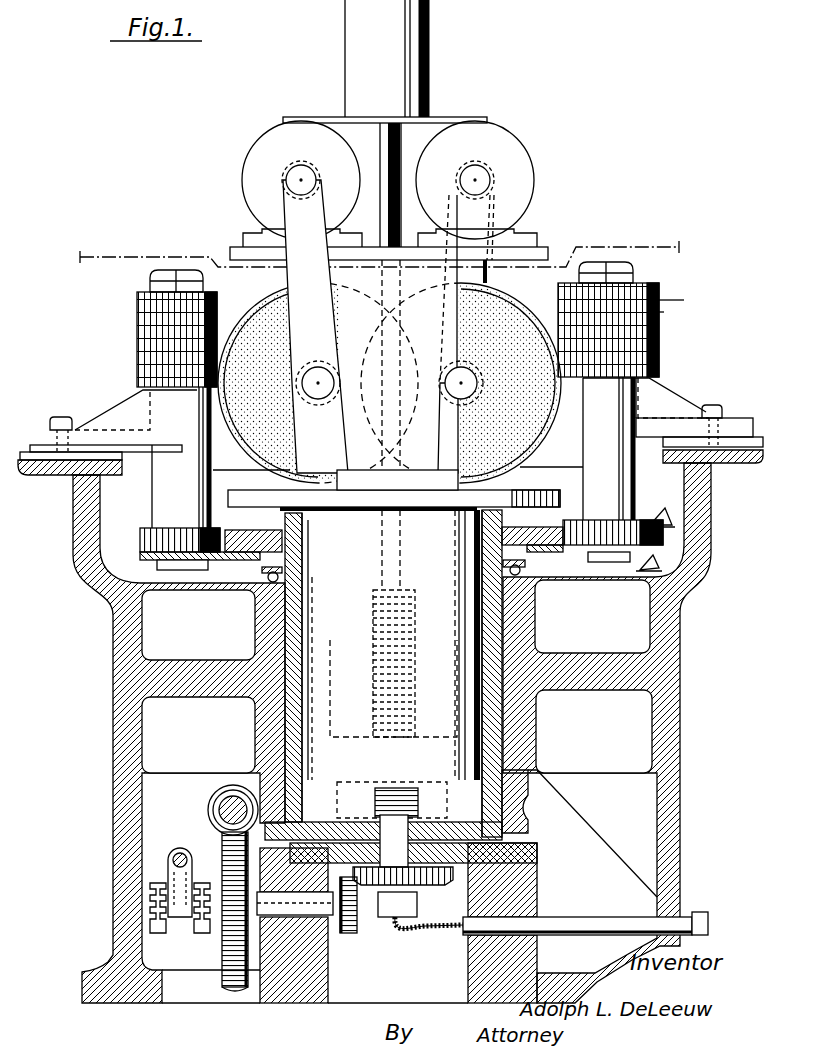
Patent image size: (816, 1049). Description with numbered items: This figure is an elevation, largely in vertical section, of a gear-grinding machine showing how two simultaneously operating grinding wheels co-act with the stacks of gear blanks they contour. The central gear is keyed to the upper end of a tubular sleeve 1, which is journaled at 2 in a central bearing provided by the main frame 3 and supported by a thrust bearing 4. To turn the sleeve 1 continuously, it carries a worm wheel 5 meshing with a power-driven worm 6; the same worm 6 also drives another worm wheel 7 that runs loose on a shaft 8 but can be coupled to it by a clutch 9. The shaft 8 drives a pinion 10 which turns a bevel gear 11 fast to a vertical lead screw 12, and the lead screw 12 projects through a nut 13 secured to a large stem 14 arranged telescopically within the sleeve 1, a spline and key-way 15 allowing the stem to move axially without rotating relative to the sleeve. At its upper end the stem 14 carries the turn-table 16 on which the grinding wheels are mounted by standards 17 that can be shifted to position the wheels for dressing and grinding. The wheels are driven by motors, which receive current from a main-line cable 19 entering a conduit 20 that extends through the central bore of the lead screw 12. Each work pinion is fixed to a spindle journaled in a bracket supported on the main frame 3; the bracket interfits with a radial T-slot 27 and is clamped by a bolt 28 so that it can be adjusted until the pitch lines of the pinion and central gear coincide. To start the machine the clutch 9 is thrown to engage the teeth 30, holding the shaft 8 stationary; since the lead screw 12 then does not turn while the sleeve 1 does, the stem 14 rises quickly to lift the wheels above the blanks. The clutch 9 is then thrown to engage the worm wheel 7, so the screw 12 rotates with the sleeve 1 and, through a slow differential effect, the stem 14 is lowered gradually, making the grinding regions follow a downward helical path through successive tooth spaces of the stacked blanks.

The tubular sleeve 1 is at (302, 572).
The journal 2 is at (288, 625).
The main frame 3 is at (712, 506).
The thrust bearing 4 is at (266, 576).
The worm wheel 5 is at (540, 816).
The worm 6 is at (207, 808).
The worm wheel 7 is at (222, 842).
The shaft 8 is at (295, 903).
The clutch 9 is at (188, 935).
The pinion 10 is at (352, 930).
The bevel gear 11 is at (446, 887).
The lead screw 12 is at (412, 618).
The nut 13 is at (425, 734).
The stem 14 is at (401, 811).
The spline and key-way 15 is at (309, 590).
The turn-table 16 is at (398, 488).
The standards 17 is at (388, 335).
The main-line cable 19 is at (712, 917).
The conduit 20 is at (384, 135).
The radial T-slot 27 is at (38, 474).
The bolt 28 is at (58, 417).
The teeth 30 is at (168, 881).